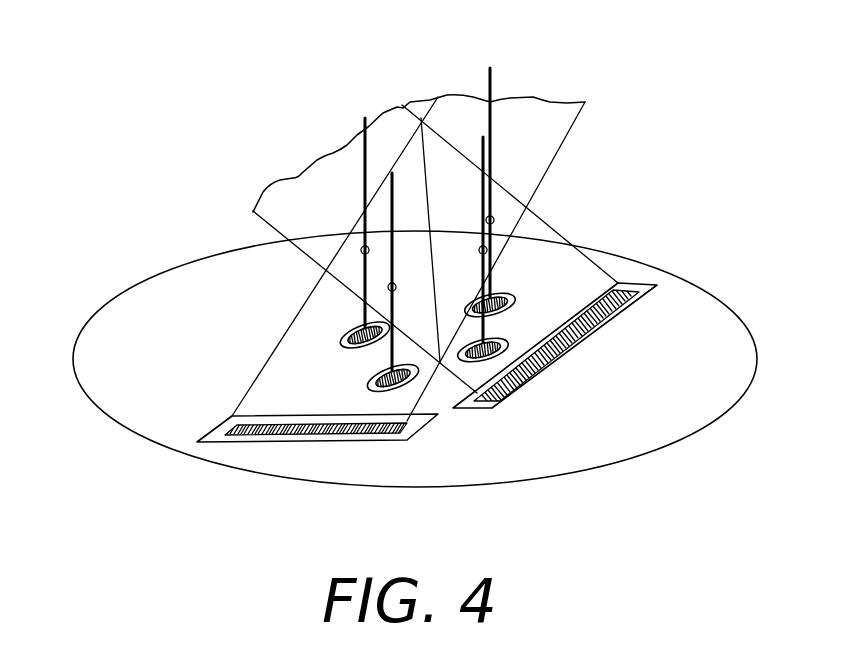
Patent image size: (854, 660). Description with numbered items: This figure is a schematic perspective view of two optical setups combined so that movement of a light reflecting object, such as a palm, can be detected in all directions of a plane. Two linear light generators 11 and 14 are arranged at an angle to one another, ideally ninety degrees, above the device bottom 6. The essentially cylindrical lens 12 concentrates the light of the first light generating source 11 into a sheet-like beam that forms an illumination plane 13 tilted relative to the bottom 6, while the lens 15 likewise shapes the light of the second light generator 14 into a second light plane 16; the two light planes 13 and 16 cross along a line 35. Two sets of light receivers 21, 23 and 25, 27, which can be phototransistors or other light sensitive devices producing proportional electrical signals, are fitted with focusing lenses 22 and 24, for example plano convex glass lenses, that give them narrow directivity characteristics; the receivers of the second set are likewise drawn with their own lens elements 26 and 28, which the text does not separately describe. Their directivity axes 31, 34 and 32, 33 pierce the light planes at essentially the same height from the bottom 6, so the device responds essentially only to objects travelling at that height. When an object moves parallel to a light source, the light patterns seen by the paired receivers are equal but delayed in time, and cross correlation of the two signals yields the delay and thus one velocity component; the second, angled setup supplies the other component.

The device bottom 6 is at (152, 317).
The light generating source 11 is at (222, 425).
The cylindrical lens 12 is at (285, 430).
The illumination plane 13 is at (588, 106).
The light generator 14 is at (513, 394).
The lens 15 is at (573, 345).
The light plane 16 is at (547, 224).
The light receiver 21 is at (356, 327).
The focusing lens 22 is at (342, 338).
The light receiver 23 is at (512, 338).
The focusing lens 24 is at (493, 340).
The light receiver 25 is at (513, 290).
The third disc electrode 26 is at (497, 295).
The light receiver 27 is at (370, 382).
The second disc electrode 28 is at (385, 368).
The directivity axis 31 is at (365, 144).
The directivity axis 32 is at (492, 70).
The directivity axis 33 is at (393, 193).
The directivity axis 34 is at (483, 146).
The line 35 is at (437, 100).